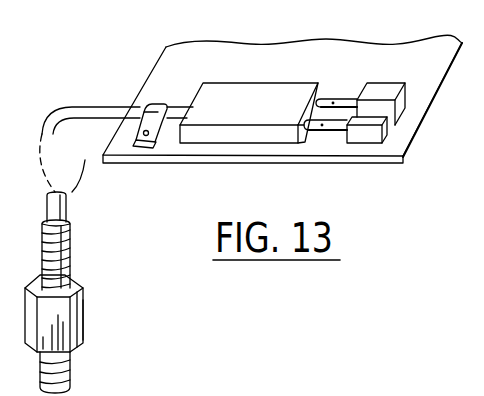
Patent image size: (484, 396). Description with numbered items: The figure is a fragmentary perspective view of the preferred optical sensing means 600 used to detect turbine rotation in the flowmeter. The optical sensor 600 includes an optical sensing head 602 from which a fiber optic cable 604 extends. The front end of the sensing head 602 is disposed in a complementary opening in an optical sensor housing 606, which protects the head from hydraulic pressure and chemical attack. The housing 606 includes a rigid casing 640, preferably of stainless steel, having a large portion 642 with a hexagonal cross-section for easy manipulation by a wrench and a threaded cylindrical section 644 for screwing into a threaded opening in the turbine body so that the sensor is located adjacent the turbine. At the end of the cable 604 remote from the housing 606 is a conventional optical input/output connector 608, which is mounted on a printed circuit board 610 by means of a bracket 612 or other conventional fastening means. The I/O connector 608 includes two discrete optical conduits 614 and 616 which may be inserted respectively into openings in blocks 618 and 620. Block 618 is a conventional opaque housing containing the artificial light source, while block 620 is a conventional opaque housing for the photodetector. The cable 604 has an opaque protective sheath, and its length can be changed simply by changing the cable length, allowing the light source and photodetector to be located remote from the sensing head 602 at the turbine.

The optical sensing means 600 is at (236, 189).
The optical sensing head 602 is at (81, 226).
The fiber optic cable 604 is at (101, 117).
The optical sensor housing 606 is at (92, 246).
The optical input/output connector 608 is at (280, 112).
The printed circuit board 610 is at (165, 47).
The bracket 612 is at (136, 134).
The optical conduit 614 is at (340, 96).
The optical conduit 616 is at (331, 130).
The block 618 is at (404, 106).
The block 620 is at (385, 127).
The rigid casing 640 is at (92, 295).
The large portion with hexagonal cross-section 642 is at (84, 330).
The threaded cylindrical section 644 is at (71, 366).